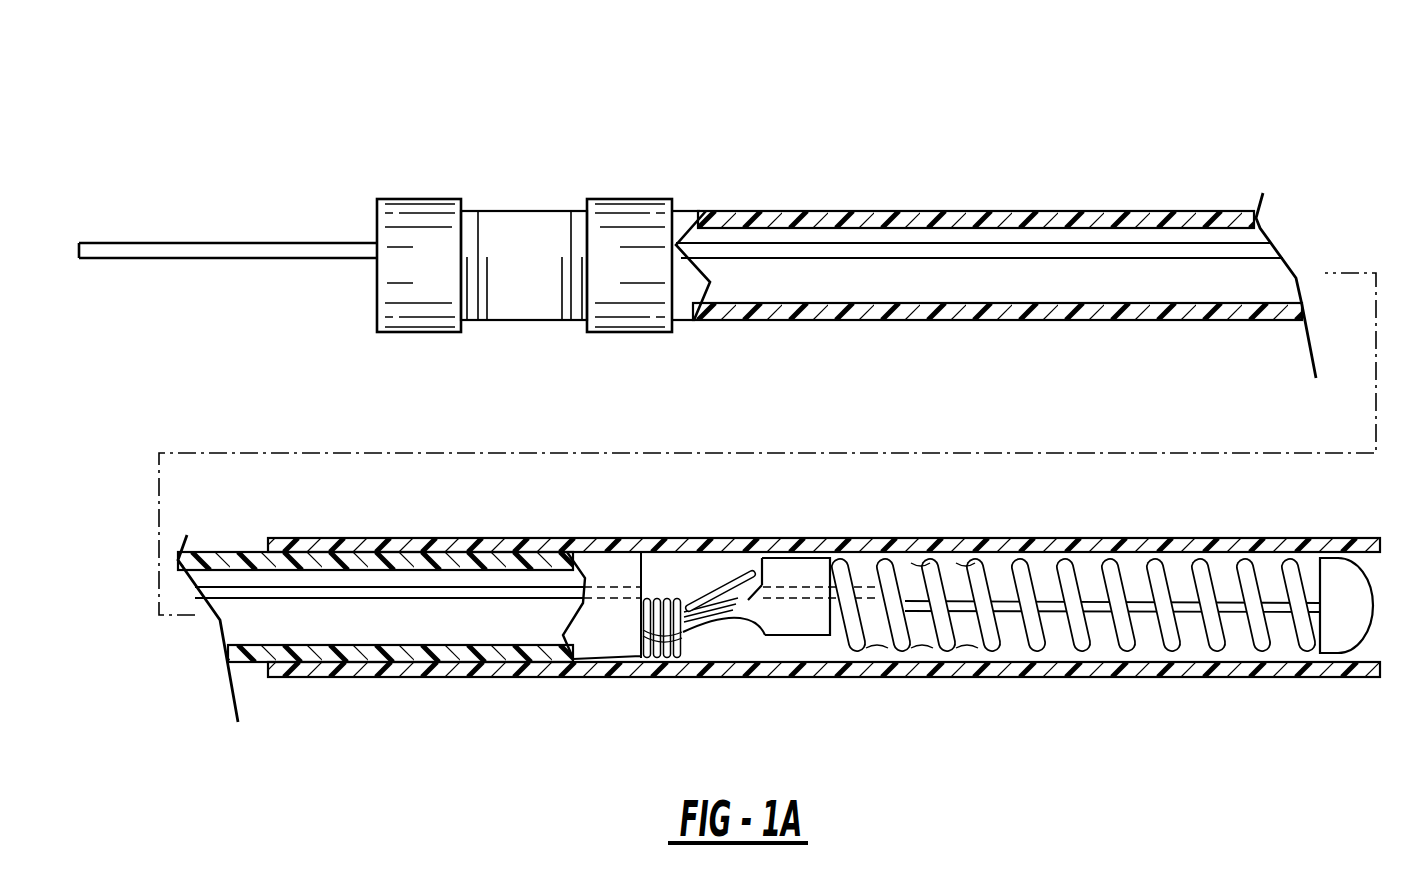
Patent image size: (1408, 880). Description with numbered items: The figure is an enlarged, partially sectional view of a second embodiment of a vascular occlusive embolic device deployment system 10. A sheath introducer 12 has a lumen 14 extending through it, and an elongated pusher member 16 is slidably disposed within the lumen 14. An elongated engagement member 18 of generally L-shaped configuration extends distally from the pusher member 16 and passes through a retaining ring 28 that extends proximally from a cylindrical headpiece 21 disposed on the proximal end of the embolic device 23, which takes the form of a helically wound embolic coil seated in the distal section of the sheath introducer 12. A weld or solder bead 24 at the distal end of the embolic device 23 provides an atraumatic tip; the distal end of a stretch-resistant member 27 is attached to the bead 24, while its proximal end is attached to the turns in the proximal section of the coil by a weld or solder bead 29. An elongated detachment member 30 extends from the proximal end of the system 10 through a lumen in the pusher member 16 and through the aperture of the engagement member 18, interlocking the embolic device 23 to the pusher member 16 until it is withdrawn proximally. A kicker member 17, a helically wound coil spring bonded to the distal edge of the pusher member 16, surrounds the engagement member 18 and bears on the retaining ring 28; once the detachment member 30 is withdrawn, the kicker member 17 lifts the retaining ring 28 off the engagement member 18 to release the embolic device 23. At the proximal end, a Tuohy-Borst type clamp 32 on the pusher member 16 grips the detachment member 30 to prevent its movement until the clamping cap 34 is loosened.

The embolic device deployment system 10 is at (1125, 805).
The sheath introducer 12 is at (433, 537).
The lumen 14 is at (625, 548).
The pusher member 16 is at (927, 211).
The kicker member 17 is at (655, 750).
The engagement member 18 is at (747, 568).
The headpiece 21 is at (815, 556).
The embolic device 23 is at (1150, 568).
The bead 24 is at (1370, 733).
The stretch-resistant member 27 is at (1135, 730).
The retaining ring 28 is at (688, 605).
The bead 29 is at (978, 735).
The detachment member 30 is at (380, 733).
The clamp 32 is at (525, 211).
The clamping cap 34 is at (420, 198).